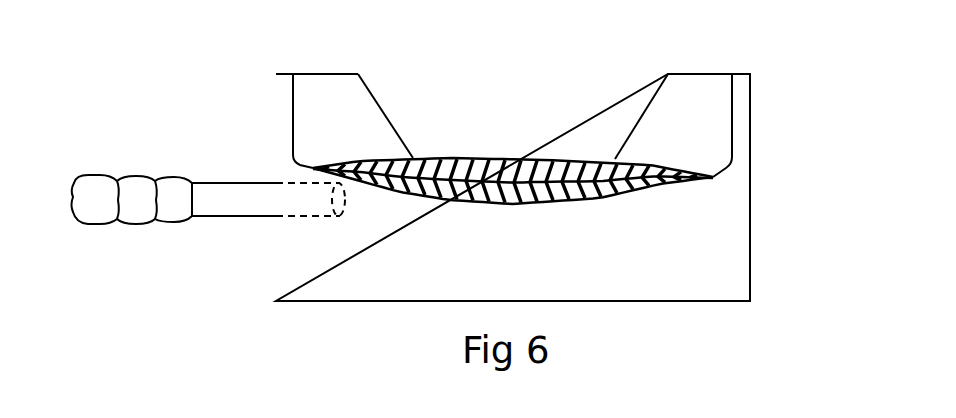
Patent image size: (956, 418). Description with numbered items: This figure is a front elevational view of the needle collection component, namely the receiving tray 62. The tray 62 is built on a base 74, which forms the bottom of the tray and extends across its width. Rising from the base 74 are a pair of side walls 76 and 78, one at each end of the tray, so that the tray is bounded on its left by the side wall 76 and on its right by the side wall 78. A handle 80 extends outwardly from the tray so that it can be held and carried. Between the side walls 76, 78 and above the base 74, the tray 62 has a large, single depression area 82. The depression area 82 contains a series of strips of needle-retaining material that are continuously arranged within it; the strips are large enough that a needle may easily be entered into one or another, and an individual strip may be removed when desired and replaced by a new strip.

The receiving tray 62 is at (383, 101).
The base 74 is at (323, 265).
The side wall 76 is at (276, 145).
The side wall 78 is at (752, 110).
The handle 80 is at (160, 177).
The depression area 82 is at (530, 175).